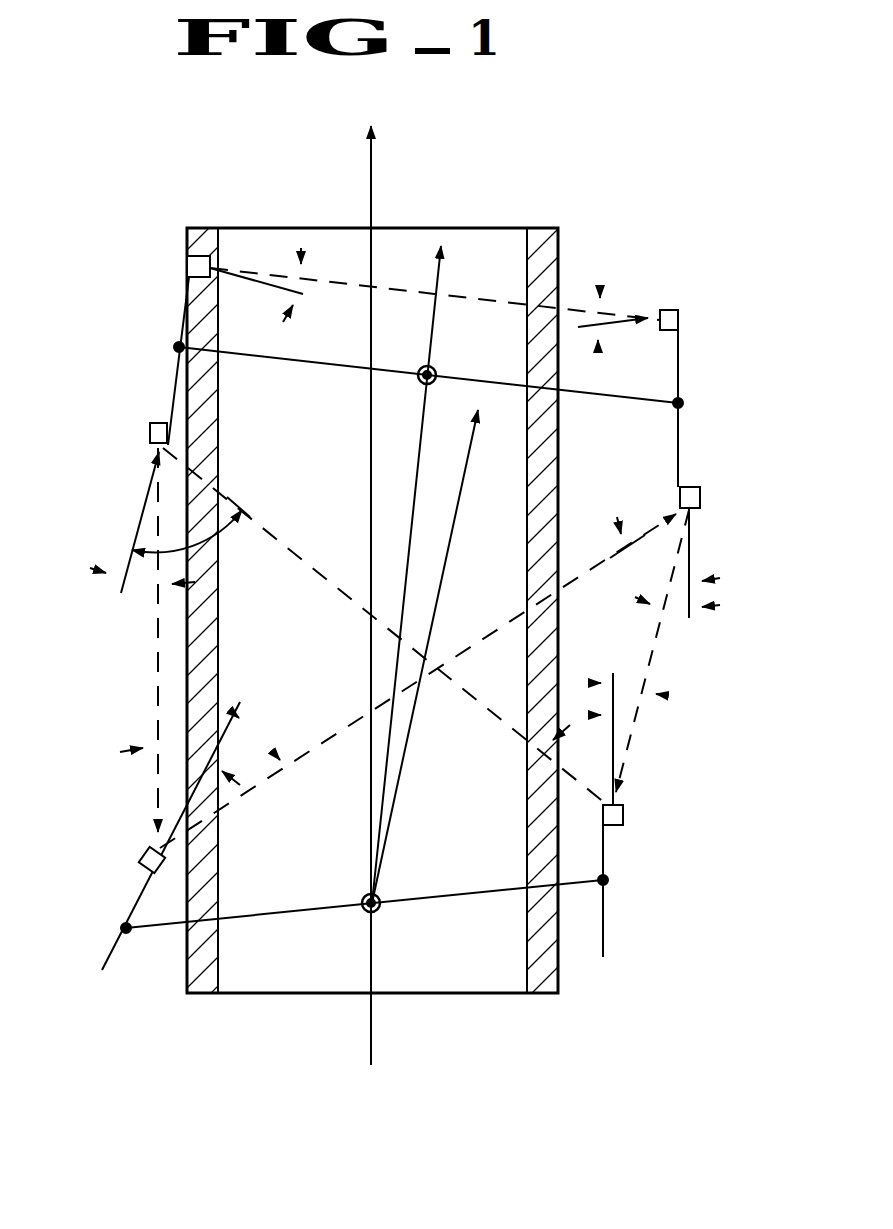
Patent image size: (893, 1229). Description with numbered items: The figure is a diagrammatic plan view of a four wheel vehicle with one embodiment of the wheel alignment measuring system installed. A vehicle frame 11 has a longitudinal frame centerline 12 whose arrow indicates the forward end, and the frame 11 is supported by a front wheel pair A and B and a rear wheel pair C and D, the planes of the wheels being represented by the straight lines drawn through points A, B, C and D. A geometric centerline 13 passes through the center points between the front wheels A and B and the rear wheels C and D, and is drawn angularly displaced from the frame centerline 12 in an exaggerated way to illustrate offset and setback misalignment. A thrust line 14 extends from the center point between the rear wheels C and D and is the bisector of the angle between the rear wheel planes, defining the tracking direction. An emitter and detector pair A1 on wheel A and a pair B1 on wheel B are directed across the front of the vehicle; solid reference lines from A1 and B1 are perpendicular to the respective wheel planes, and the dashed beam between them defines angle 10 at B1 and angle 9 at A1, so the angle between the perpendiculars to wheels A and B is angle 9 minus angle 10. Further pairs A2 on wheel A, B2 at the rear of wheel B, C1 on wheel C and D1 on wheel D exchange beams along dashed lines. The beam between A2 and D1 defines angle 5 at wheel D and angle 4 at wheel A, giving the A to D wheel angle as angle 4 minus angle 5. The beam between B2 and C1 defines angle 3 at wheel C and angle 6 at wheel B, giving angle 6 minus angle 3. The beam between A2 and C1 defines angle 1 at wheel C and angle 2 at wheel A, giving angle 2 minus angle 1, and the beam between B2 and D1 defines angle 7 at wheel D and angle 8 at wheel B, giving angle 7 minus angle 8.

The angle 1 is at (153, 640).
The angle 2 is at (142, 533).
The angle 3 is at (191, 836).
The angle 4 is at (191, 532).
The angle 5 is at (577, 725).
The angle 6 is at (633, 551).
The angle 7 is at (628, 687).
The angle 8 is at (677, 574).
The angle 9 is at (270, 285).
The angle 10 is at (613, 302).
The vehicle frame 11 is at (206, 228).
The frame centerline 12 is at (372, 150).
The geometric centerline 13 is at (430, 337).
The thrust line 14 is at (446, 567).
The left front wheel A is at (174, 347).
The emitter and detector pair A1 is at (187, 265).
The emitter/detector pair A2 is at (150, 428).
The right front wheel B is at (683, 403).
The emitter and detector pair B1 is at (678, 318).
The emitter/detector pair B2 is at (700, 493).
The left rear wheel C is at (122, 929).
The emitter/detector pair C1 is at (143, 856).
The right rear wheel D is at (608, 881).
The emitter/detector pair D1 is at (623, 813).